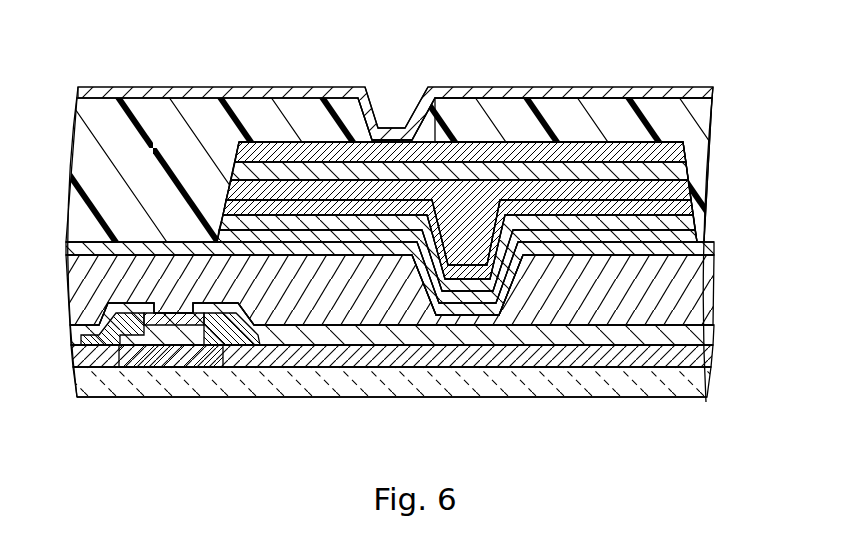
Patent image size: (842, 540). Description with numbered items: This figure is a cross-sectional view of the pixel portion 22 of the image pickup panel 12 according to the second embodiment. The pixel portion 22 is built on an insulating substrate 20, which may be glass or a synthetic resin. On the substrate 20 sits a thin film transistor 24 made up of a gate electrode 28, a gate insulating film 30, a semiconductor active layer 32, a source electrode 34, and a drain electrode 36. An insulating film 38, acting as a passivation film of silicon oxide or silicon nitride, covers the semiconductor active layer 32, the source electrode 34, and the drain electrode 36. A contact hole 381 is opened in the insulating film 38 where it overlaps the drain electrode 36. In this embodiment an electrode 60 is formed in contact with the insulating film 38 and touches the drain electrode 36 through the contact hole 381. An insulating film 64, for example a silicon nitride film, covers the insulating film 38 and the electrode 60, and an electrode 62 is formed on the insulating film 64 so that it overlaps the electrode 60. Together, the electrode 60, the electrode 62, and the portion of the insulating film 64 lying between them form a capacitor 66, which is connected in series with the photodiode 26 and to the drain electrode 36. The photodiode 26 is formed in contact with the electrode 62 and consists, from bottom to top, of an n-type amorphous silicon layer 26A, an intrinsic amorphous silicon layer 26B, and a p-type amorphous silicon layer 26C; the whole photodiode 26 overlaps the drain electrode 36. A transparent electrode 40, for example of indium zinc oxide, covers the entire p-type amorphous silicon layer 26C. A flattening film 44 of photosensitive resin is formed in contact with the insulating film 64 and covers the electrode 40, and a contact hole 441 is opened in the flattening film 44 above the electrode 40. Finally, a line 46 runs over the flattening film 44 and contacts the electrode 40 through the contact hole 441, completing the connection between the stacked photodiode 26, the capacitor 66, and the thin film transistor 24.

The image pickup panel 12 is at (718, 94).
The substrate 20 is at (708, 388).
The pixel portion 22 is at (264, 374).
The thin film transistor 24 is at (158, 374).
The photodiode 26 is at (522, 220).
The n-type amorphous silicon layer 26A is at (692, 208).
The intrinsic amorphous silicon layer 26B is at (690, 190).
The p-type amorphous silicon layer 26C is at (688, 172).
The gate electrode 28 is at (187, 369).
The gate insulating film 30 is at (710, 353).
The semiconductor active layer 32 is at (137, 329).
The source electrode 34 is at (112, 323).
The drain electrode 36 is at (710, 330).
The insulating film 38 is at (73, 297).
The contact hole 381 is at (507, 300).
The electrode 40 is at (685, 150).
The flattening film 44 is at (72, 178).
The contact hole 441 is at (377, 88).
The line 46 is at (487, 86).
The electrode 60 is at (698, 250).
The electrode 62 is at (694, 224).
The insulating film 64 is at (696, 236).
The capacitor 66 is at (443, 265).